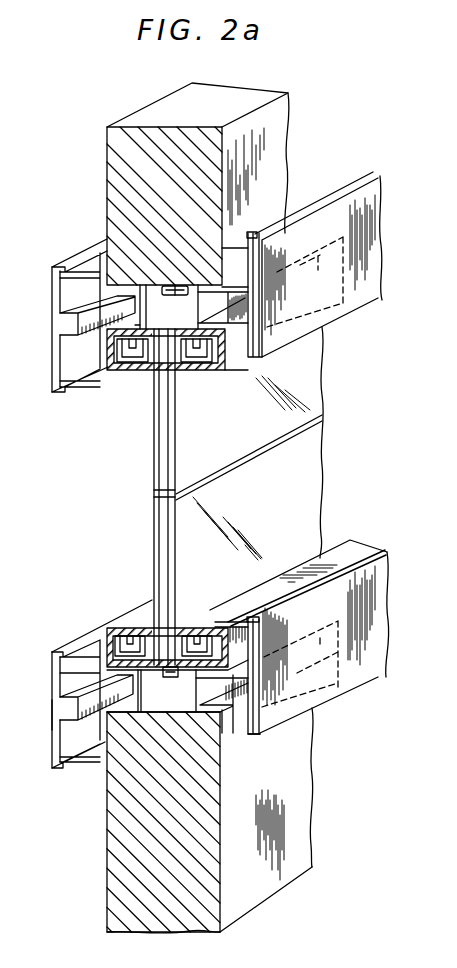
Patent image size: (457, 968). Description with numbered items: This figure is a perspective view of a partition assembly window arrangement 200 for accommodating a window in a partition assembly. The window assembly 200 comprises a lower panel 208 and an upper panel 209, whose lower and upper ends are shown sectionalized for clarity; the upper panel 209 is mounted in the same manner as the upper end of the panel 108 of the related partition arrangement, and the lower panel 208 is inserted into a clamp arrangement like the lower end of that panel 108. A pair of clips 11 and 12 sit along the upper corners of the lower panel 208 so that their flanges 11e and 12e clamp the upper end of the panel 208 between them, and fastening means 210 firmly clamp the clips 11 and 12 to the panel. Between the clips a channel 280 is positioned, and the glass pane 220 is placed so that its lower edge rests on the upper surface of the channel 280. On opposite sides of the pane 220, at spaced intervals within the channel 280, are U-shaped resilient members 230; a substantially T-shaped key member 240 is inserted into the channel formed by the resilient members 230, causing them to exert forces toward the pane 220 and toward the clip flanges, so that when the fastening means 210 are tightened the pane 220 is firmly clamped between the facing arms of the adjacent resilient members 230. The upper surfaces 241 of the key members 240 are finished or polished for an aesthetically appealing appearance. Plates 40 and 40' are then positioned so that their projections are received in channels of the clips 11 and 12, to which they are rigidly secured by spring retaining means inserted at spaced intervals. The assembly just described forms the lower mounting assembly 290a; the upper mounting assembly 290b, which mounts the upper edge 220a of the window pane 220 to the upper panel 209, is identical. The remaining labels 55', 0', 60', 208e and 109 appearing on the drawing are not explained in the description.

The upper panel 209 is at (145, 118).
The cut-off reference (adjacent sheet) 55' is at (17, 97).
The cut-off reference (adjacent sheet) 0' is at (8, 218).
The cut-off reference (adjacent sheet) 60' is at (18, 555).
The upper mounting assembly 290b is at (75, 395).
The upper edge of window pane 220a is at (158, 329).
The glass pane 220 is at (236, 425).
The partition assembly window arrangement 200 is at (377, 425).
The T-shaped key member 240 is at (373, 529).
The plate 40' is at (404, 614).
The upper surface of key member 241 is at (290, 577).
The lower mounting assembly 290a is at (130, 577).
The channel 280 is at (107, 645).
The fastening means 210 is at (178, 676).
The U-shaped resilient member 230 is at (102, 665).
The clip 11 is at (130, 692).
The flange of clip 11 11e is at (100, 744).
The plate 40 is at (33, 720).
The flange of clip 12 12e is at (232, 735).
The clip 12 is at (229, 752).
The lower panel 208 is at (118, 835).
The top edge of lower block 208e is at (165, 703).
The side face of lower block 109 is at (297, 803).
The panel 108 is at (107, 915).